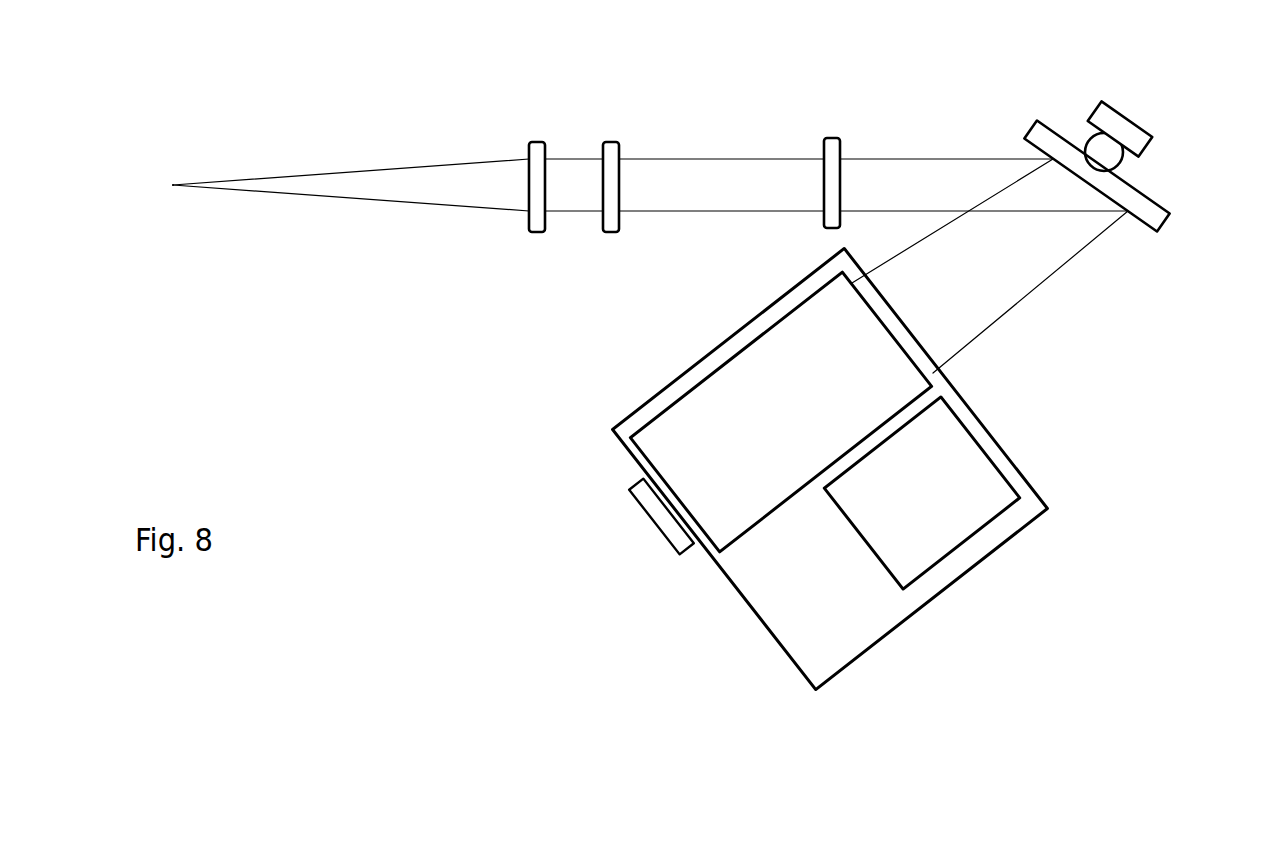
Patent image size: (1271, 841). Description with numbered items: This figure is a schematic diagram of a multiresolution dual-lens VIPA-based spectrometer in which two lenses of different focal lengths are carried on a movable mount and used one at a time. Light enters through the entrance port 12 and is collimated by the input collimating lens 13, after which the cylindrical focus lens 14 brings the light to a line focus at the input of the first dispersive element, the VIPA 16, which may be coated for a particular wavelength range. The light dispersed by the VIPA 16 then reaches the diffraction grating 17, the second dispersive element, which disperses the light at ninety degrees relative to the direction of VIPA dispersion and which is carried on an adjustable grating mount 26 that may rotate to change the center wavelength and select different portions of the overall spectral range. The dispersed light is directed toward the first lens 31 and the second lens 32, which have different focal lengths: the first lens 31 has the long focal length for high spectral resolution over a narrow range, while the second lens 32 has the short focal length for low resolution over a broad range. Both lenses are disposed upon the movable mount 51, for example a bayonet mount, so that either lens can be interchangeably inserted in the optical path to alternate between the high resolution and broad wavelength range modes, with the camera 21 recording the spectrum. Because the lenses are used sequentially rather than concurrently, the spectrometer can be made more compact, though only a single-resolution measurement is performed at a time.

The entrance port 12 is at (172, 181).
The input collimating lens 13 is at (530, 143).
The cylindrical focus lens 14 is at (622, 142).
The VIPA 16 is at (843, 147).
The diffraction grating 17 is at (1160, 213).
The adjustable grating mount 26 is at (1120, 130).
The camera 21 is at (678, 553).
The first lens 31 is at (757, 429).
The second lens 32 is at (905, 497).
The movable mount 51 is at (800, 620).